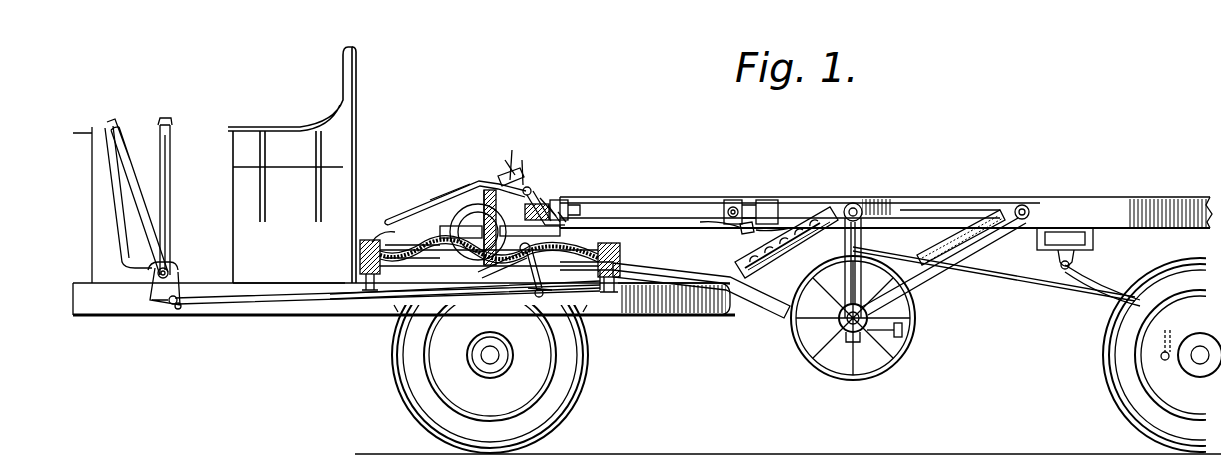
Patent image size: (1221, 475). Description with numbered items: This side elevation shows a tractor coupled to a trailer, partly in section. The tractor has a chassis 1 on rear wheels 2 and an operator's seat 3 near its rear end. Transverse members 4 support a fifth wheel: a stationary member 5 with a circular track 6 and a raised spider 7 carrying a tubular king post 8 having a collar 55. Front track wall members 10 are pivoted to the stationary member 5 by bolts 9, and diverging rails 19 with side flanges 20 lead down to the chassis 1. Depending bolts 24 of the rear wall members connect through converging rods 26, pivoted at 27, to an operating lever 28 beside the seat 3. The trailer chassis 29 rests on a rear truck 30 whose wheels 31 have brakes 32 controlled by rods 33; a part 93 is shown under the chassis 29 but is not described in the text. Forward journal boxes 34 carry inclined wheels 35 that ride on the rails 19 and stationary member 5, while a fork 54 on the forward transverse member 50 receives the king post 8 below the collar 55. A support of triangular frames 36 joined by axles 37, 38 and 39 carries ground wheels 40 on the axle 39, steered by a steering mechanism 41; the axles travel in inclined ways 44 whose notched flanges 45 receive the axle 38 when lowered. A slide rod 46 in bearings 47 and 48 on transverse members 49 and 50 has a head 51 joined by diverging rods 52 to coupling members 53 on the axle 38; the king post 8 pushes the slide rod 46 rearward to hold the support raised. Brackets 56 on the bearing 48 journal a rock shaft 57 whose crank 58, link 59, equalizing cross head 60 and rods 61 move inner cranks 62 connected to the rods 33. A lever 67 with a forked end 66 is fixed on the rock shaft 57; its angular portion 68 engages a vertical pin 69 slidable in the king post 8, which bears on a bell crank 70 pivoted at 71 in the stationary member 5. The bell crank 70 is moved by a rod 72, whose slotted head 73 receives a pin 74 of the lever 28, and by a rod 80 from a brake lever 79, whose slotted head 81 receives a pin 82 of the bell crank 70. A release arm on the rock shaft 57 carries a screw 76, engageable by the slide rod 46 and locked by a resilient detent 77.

The chassis 1 is at (130, 318).
The rear set of wheels 2 is at (566, 400).
The driver's seat 3 is at (292, 165).
The transverse members 4 is at (372, 282).
The stationary member 5 is at (358, 265).
The circular track 6 is at (378, 245).
The spider 7 is at (489, 245).
The king post 8 is at (486, 210).
The bolts 9 is at (366, 240).
The front track wall members 10 is at (405, 250).
The diverging rails 19 is at (745, 292).
The side flanges 20 is at (668, 266).
The depending bolts 24 is at (590, 290).
The converging rods 26 is at (227, 306).
The pivotal connection 27 is at (176, 310).
The operating lever 28 is at (122, 150).
The trailer chassis 29 is at (1128, 198).
The rear axle construction 30 is at (1195, 362).
The ground engaging wheels 31 is at (1112, 348).
The brakes 32 is at (1162, 352).
The rods 33 is at (1000, 282).
The side journal boxes 34 is at (545, 230).
The inclined wheels 35 is at (465, 200).
The triangular frames 36 is at (955, 202).
The transverse axle 37 is at (1022, 204).
The transverse axle 38 is at (862, 208).
The axle 39 is at (812, 338).
The ground engaging wheels 40 is at (897, 345).
The steering mechanism 41 is at (905, 331).
The inclined ways 44 is at (803, 272).
The notched flanges 45 is at (790, 214).
The slide rod 46 is at (668, 204).
The bearing 47 is at (767, 200).
The bearing 48 is at (565, 200).
The transverse member 49 is at (765, 200).
The transverse member 50 is at (618, 258).
The head 51 is at (728, 203).
The diverging rods 52 is at (746, 205).
The coupling members 53 is at (855, 203).
The fork 54 is at (448, 230).
The collar 55 is at (462, 228).
The brackets 56 is at (540, 198).
The rock shaft 57 is at (527, 187).
The crank 58 is at (548, 205).
The link 59 is at (548, 222).
The equalizing cross head 60 is at (560, 212).
The rods 61 is at (730, 232).
The inner cranks 62 is at (740, 226).
The forked end 66 is at (505, 160).
The lever 67 is at (403, 218).
The angular portion 68 is at (502, 180).
The vertical pin 69 is at (484, 195).
The bell crank 70 is at (500, 268).
The pivot 71 is at (530, 285).
The rod 72 is at (345, 296).
The slotted head 73 is at (168, 305).
The pin 74 is at (172, 278).
The screw 76 is at (512, 150).
The resilient detent 77 is at (522, 160).
The brake lever 79 is at (168, 176).
The rod 80 is at (262, 288).
The slotted head 81 is at (537, 300).
The pin 82 is at (545, 294).
The spring bracket 93 is at (1048, 201).